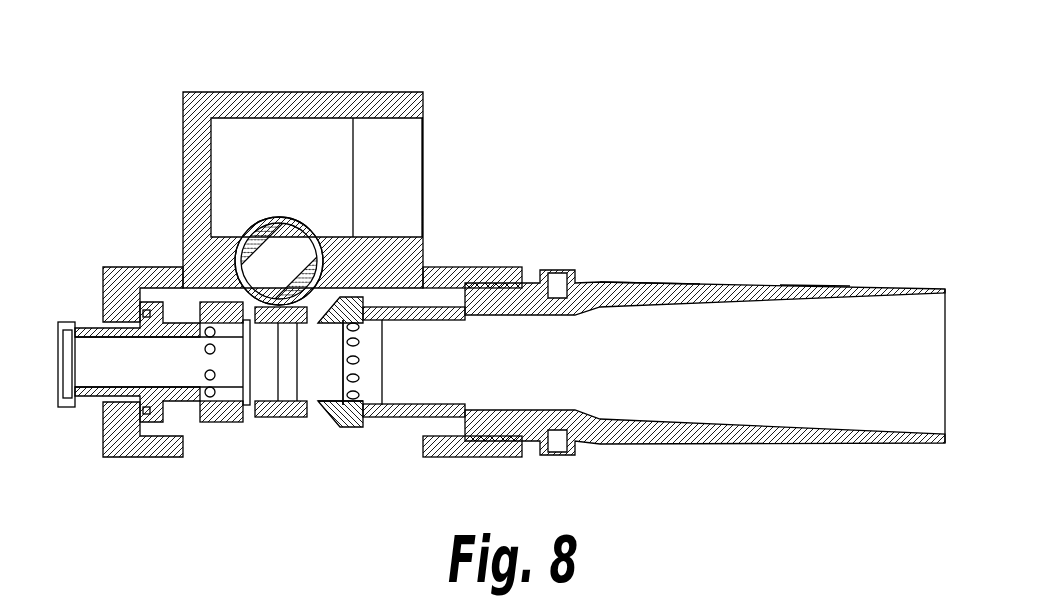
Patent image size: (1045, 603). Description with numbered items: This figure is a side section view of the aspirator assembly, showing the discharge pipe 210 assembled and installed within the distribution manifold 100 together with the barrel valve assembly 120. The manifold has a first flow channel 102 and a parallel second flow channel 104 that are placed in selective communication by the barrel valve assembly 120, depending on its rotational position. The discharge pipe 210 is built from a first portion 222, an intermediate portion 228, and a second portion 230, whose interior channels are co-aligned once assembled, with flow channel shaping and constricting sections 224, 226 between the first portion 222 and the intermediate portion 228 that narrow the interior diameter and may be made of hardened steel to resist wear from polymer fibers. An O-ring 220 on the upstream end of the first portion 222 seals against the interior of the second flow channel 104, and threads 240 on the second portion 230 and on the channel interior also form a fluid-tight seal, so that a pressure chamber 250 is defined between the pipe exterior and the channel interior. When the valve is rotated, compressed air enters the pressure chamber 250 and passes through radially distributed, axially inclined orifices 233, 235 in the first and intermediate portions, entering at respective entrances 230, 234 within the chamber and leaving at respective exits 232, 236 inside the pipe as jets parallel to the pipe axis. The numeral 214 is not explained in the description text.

The distribution manifold 100 is at (230, 85).
The first flow channel 102 is at (210, 140).
The barrel valve assembly 120 is at (280, 278).
The O-ring 220 is at (147, 312).
The first portion 222 is at (100, 322).
The second flow channel 104 is at (145, 428).
The orifices 233 is at (210, 353).
The exit 232 is at (213, 397).
The entrance 230 is at (197, 400).
The flow channel shaping and constricting section 226 is at (332, 340).
The flow channel shaping and constricting section 224 is at (287, 342).
The intermediate portion 228 is at (373, 337).
The orifices 235 is at (347, 365).
The entrance 234 is at (323, 417).
The exit 236 is at (353, 398).
The pressure chamber 250 is at (398, 430).
The threads 240 is at (485, 435).
The discharge pipe 210 is at (710, 278).
The tube wall 214 is at (622, 282).